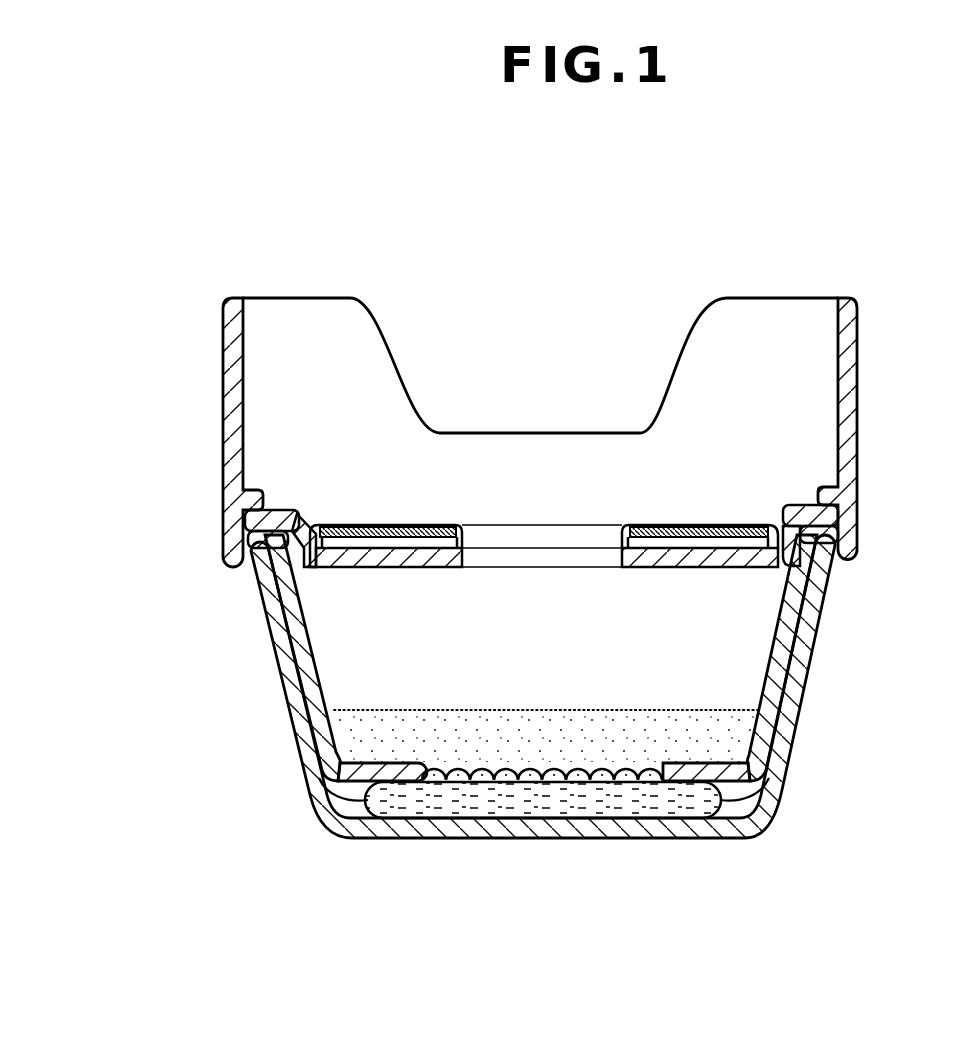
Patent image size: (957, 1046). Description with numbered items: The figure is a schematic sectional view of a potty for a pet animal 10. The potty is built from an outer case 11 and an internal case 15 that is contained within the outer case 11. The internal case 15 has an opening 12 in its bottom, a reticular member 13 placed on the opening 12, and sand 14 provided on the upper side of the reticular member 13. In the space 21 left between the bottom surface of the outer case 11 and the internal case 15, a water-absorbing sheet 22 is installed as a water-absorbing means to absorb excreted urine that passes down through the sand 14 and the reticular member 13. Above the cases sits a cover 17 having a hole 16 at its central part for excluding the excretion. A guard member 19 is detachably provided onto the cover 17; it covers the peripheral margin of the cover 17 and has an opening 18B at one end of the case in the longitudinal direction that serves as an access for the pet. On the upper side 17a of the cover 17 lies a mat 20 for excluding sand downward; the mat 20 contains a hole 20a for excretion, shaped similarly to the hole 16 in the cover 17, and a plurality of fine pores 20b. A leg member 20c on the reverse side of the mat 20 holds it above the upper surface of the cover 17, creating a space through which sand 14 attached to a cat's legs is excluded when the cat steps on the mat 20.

The potty for a pet animal 10 is at (696, 236).
The outer case 11 is at (780, 789).
The opening 12 is at (449, 776).
The reticular member 13 is at (587, 770).
The sand 14 is at (667, 717).
The internal case 15 is at (793, 583).
The hole 16 is at (614, 557).
The cover 17 is at (273, 508).
The upper side of the cover 17a is at (332, 543).
The opening 18B is at (690, 330).
The guard member 19 is at (858, 333).
The mat 20 is at (358, 518).
The hole for excretion 20a is at (473, 543).
The fine pores 20b is at (378, 527).
The leg member 20c is at (303, 565).
The space 21 is at (345, 806).
The water-absorbing sheet 22 is at (646, 806).